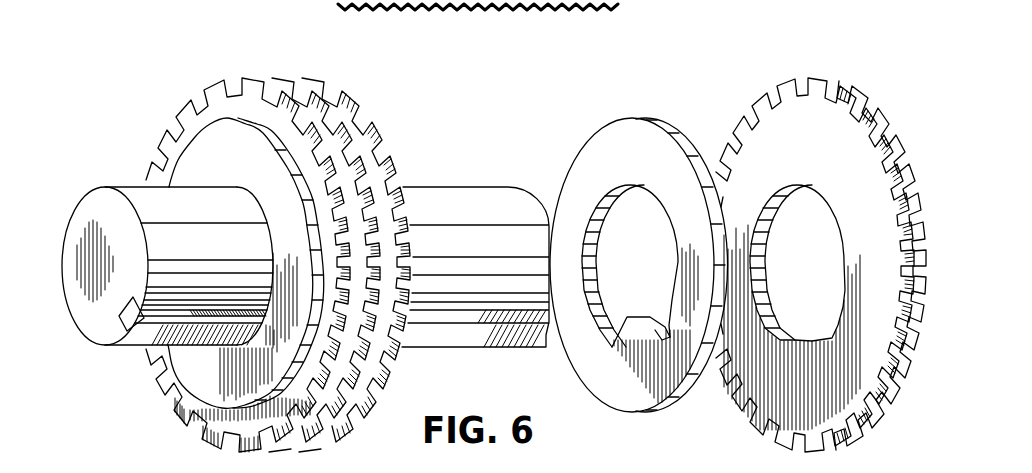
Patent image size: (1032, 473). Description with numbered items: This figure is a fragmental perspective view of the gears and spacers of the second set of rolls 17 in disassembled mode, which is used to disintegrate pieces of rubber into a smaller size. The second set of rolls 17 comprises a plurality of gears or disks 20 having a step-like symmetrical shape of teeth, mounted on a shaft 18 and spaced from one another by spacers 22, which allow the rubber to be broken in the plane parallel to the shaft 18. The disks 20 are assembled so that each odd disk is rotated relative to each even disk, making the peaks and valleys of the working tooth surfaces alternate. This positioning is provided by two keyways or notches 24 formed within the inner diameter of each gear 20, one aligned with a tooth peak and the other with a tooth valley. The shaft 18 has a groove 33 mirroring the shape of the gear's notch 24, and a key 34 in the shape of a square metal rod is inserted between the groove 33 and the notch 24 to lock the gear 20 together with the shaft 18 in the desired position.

The second set of rolls 17 is at (258, 76).
The shaft 18 is at (475, 193).
The gear or disk 20 is at (815, 80).
The spacer 22 is at (628, 130).
The keyway or notch 24 is at (612, 343).
The groove 33 is at (132, 297).
The key 34 is at (150, 333).